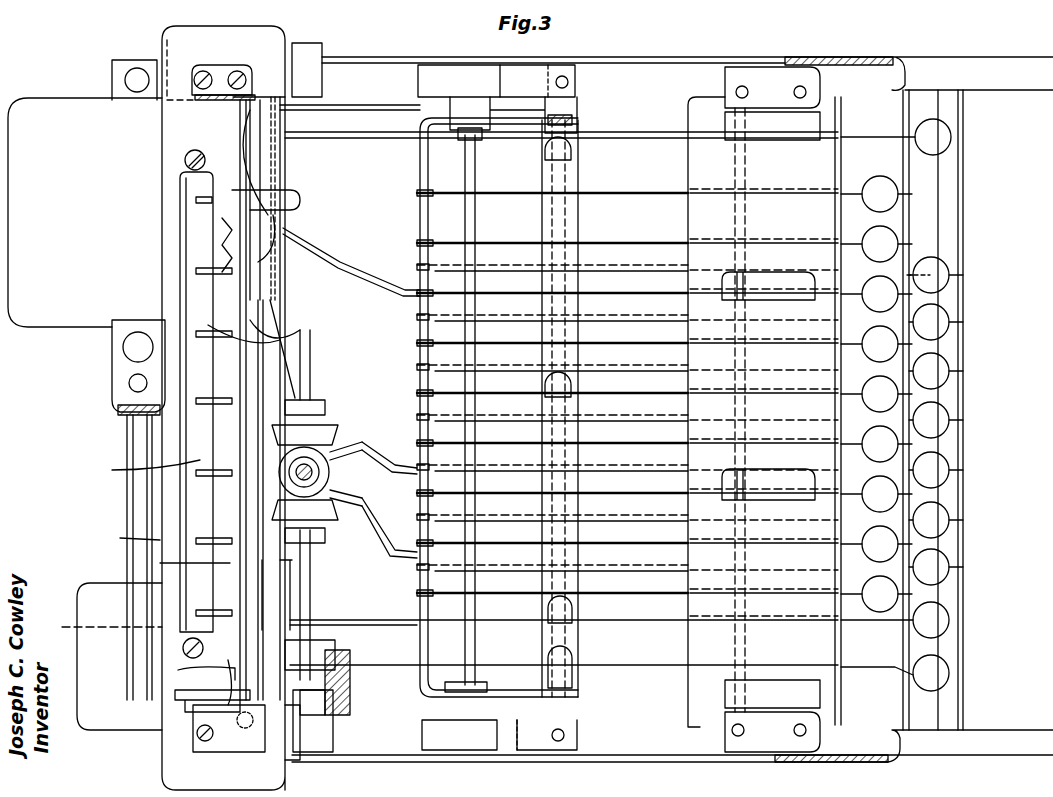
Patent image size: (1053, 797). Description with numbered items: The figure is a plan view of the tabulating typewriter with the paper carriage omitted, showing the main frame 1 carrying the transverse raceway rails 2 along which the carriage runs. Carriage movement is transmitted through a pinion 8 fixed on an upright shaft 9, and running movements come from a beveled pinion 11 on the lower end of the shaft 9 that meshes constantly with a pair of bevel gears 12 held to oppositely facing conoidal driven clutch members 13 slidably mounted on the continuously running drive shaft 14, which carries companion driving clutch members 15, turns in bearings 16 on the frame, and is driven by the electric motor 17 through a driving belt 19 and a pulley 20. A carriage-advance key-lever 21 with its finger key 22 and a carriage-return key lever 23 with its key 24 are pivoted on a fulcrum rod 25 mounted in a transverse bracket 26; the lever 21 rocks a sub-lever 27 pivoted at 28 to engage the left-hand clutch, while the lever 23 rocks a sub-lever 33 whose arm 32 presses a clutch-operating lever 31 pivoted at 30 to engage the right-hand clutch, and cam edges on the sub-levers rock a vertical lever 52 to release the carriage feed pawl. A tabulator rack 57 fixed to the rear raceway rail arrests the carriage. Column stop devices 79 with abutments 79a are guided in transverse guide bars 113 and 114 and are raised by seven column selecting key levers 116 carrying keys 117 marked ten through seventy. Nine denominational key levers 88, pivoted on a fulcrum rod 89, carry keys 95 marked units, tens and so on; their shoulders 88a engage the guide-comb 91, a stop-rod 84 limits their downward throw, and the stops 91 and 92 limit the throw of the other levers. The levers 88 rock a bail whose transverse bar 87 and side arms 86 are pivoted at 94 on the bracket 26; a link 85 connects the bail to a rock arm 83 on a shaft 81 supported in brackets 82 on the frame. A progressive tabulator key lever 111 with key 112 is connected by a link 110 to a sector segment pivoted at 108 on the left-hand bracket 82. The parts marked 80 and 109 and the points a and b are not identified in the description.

The main frame 1 is at (900, 58).
The transverse raceway rails 2 is at (310, 45).
The pinion 8 is at (156, 593).
The upright shaft 9 is at (328, 485).
The beveled pinion 11 is at (332, 470).
The bevel gears 12 is at (362, 442).
The conoidal driven clutch members 13 is at (378, 440).
The drive shaft 14 is at (312, 380).
The conoidal driving clutch members 15 is at (318, 430).
The bearings 16 is at (320, 400).
The electric motor 17 is at (85, 193).
The driving belt 19 is at (352, 688).
The pulley 20 is at (350, 715).
The carriage-advance key-lever 21 is at (383, 618).
The finger key 22 is at (948, 615).
The carriage-return key lever 23 is at (648, 132).
The carriage-return key 24 is at (952, 148).
The fulcrum rod 25 is at (575, 155).
The bracket 26 is at (580, 222).
The sub-lever 27 is at (335, 640).
The pivot 28 is at (290, 560).
The pivot 30 is at (270, 470).
The clutch-operating lever 31 is at (285, 380).
The arm 32 is at (280, 320).
The sub-lever 33 is at (292, 190).
The vertical lever 52 is at (160, 540).
The tabulator rack 57 is at (325, 755).
The column selecting stops 79 is at (222, 172).
The abutments 79a is at (141, 464).
The lever 80 is at (255, 175).
The shaft 81 is at (255, 646).
The brackets 82 is at (210, 65).
The rock arm 83 is at (258, 97).
The stop-rod 84 is at (478, 215).
The link 85 is at (373, 105).
The side arms 86 is at (520, 130).
The transverse bar of bail 87 is at (420, 160).
The denominational-point selecting key levers 88 is at (655, 243).
The shoulders 88a is at (958, 252).
The fulcrum rod 89 is at (765, 272).
The combined return stop-bar and guide-comb 91 is at (940, 183).
The stop device 92 is at (955, 220).
The pivot 94 is at (570, 112).
The keys 95 is at (880, 176).
The pivot 108 is at (175, 694).
The spring 109 is at (225, 705).
The link 110 is at (178, 670).
The progressive tabulator stop-bar-operating key lever 111 is at (394, 665).
The key 112 is at (949, 690).
The transverse guide bar 113 is at (180, 445).
The transverse guide bar 114 is at (225, 282).
The column selecting key levers 116 is at (362, 262).
The keys 117 is at (963, 276).
The point a is at (404, 203).
The point b is at (212, 339).